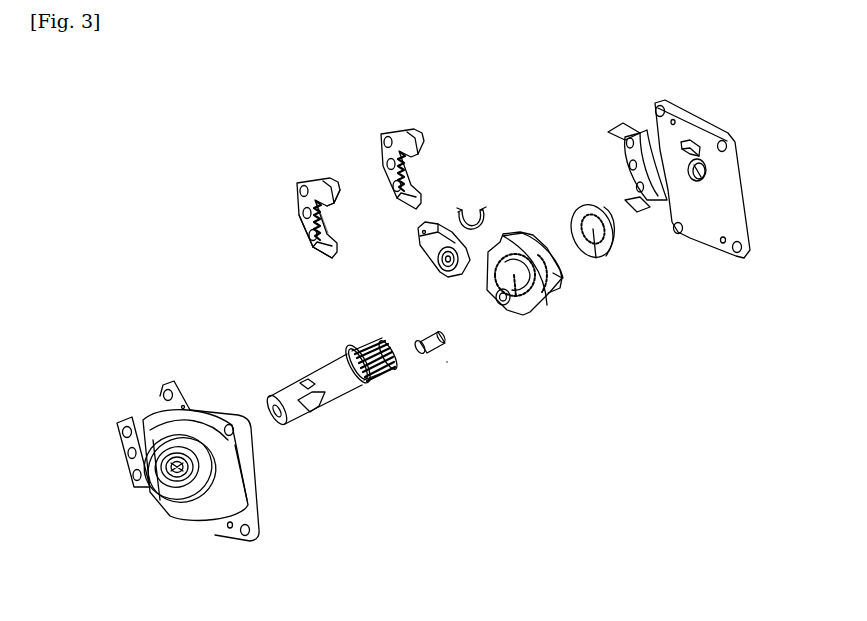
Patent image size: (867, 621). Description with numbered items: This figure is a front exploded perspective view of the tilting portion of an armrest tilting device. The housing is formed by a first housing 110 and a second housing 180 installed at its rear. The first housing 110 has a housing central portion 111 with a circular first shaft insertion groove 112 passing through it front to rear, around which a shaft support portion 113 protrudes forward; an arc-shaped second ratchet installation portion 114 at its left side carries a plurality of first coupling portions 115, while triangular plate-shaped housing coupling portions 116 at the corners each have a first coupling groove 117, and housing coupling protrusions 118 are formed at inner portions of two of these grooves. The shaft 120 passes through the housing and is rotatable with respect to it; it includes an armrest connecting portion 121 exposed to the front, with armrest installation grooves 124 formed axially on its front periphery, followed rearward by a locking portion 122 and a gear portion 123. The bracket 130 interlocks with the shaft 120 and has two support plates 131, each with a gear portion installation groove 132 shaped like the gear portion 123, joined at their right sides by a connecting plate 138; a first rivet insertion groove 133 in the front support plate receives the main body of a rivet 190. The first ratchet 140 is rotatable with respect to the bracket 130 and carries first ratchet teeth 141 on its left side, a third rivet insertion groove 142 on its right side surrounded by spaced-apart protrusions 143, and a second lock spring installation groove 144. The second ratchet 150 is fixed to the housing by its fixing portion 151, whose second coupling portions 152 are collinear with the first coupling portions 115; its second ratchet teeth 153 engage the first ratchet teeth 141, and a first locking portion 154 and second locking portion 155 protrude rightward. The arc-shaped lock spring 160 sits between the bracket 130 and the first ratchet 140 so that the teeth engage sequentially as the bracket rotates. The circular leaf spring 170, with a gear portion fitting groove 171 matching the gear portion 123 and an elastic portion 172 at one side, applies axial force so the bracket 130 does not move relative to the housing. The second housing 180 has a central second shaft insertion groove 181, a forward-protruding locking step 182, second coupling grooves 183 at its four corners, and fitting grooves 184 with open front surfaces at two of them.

The first housing 110 is at (140, 392).
The housing central portion 111 is at (190, 510).
The first shaft insertion groove 112 is at (150, 496).
The shaft support portion 113 is at (150, 486).
The second ratchet installation portion 114 is at (118, 442).
The first coupling portions 115 is at (118, 431).
The housing coupling portions 116 is at (248, 518).
The first coupling groove 117 is at (242, 545).
The housing coupling protrusions 118 is at (226, 530).
The shaft 120 is at (298, 370).
The armrest connecting portion 121 is at (337, 387).
The locking portion 122 is at (375, 383).
The gear portion 123 is at (392, 373).
The armrest installation grooves 124 is at (298, 412).
The bracket 130 is at (545, 324).
The support plates 131 is at (555, 309).
The gear portion installation groove 132 is at (512, 322).
The first rivet insertion groove 133 is at (502, 305).
The connecting plate 138 is at (560, 277).
The first ratchet 140 is at (420, 266).
The first ratchet teeth 141 is at (415, 245).
The third rivet insertion groove 142 is at (440, 275).
The spaced-apart protrusions 143 is at (450, 268).
The second lock spring installation groove 144 is at (425, 233).
The second ratchet 150 is at (293, 170).
The fixing portion 151 is at (295, 200).
The second coupling portions 152 is at (300, 222).
The second ratchet teeth 153 is at (310, 226).
The first locking portion 154 is at (325, 190).
The second locking portion 155 is at (320, 250).
The lock spring 160 is at (475, 200).
The leaf spring 170 is at (570, 197).
The gear portion fitting groove 171 is at (600, 247).
The elastic portion 172 is at (620, 234).
The second housing 180 is at (742, 276).
The second shaft insertion groove 181 is at (708, 168).
The locking step 182 is at (690, 142).
The second coupling grooves 183 is at (660, 100).
The fitting grooves 184 is at (672, 108).
The rivet 190 is at (447, 363).